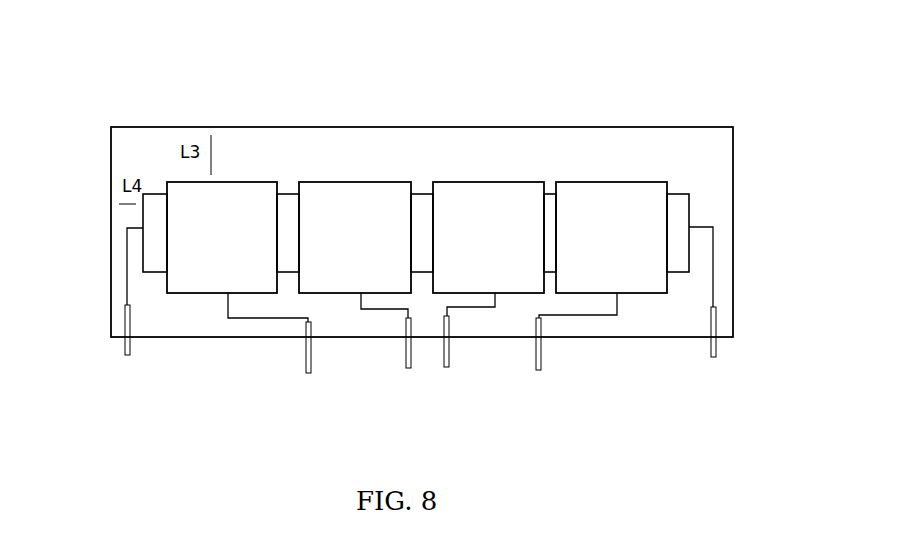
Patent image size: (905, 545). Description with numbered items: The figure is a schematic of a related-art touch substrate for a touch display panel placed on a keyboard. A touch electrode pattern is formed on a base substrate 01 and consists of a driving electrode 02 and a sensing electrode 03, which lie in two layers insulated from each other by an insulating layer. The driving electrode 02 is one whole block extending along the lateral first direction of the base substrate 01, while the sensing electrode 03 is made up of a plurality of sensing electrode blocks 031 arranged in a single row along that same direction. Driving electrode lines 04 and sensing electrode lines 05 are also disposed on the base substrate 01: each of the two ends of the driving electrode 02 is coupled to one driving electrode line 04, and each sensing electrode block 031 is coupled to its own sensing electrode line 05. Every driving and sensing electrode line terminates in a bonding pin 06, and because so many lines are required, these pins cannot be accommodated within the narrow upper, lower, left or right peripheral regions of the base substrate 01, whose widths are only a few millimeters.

The base substrate 01 is at (661, 142).
The driving electrode 02 is at (688, 195).
The sensing electrode 03 is at (417, 159).
The sensing electrode block 031 is at (578, 193).
The driving electrode line 04 is at (127, 268).
The sensing electrode line 05 is at (253, 319).
The bonding pin 06 is at (127, 343).